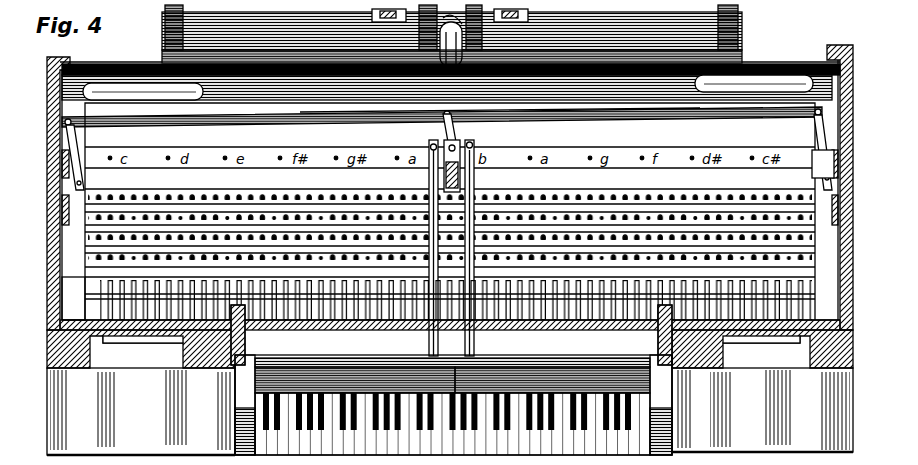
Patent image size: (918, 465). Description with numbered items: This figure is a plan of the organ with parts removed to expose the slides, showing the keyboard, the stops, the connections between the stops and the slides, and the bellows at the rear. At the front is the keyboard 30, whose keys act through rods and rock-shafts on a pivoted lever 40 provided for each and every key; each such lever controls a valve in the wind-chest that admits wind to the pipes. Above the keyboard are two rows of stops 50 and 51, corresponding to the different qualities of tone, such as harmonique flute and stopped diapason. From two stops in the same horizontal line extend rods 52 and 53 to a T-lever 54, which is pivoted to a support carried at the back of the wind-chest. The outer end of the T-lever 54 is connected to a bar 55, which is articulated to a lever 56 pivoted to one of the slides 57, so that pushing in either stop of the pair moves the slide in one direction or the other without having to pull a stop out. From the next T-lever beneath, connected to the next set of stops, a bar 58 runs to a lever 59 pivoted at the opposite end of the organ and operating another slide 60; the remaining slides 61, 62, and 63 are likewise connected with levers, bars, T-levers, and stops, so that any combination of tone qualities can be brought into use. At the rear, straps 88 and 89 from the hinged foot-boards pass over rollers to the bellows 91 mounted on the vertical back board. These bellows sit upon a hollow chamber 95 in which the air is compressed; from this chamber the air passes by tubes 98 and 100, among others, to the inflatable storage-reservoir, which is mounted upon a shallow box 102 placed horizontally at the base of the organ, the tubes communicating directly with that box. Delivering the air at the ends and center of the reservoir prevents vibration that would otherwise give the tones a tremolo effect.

The keyboard 30 is at (453, 405).
The pivoted lever 40 is at (100, 298).
The stops 50 is at (552, 380).
The stops 51 is at (355, 380).
The rod 52 is at (475, 338).
The rod 53 is at (429, 338).
The T-lever 54 is at (446, 134).
The bar 55 is at (500, 122).
The lever 56 is at (822, 178).
The slide 57 is at (450, 257).
The bar 58 is at (442, 123).
The lever 59 is at (72, 138).
The slide 60 is at (448, 235).
The slide 61 is at (450, 213).
The slide 62 is at (450, 189).
The slide 63 is at (752, 146).
The strap 88 is at (378, 18).
The strap 89 is at (526, 20).
The bellows 91 is at (452, 36).
The hollow chamber 95 is at (447, 87).
The tube 98 is at (143, 92).
The tube 100 is at (754, 84).
The shallow box 102 is at (73, 298).